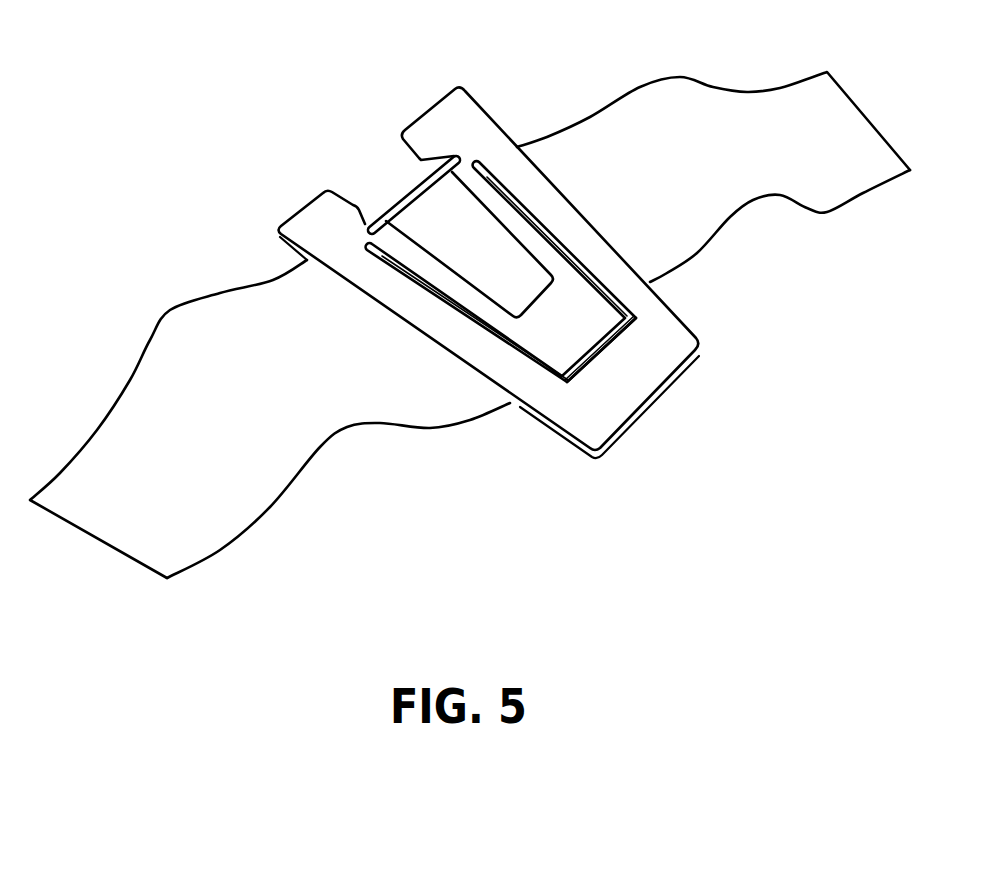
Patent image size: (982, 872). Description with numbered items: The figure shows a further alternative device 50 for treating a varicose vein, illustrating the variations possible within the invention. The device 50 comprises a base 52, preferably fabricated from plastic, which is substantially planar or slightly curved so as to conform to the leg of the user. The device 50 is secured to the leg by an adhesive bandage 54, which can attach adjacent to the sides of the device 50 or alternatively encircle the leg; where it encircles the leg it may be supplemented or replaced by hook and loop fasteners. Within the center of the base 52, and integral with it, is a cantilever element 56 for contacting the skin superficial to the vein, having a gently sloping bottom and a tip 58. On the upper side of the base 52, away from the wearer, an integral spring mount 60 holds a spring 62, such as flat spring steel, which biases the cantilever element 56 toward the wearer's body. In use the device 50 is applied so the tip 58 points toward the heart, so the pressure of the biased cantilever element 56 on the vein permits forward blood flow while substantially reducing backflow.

The alternative device 50 is at (277, 240).
The base 52 is at (672, 345).
The adhesive bandage 54 is at (587, 158).
The cantilever element 56 is at (560, 343).
The tip 58 is at (580, 375).
The spring mount 60 is at (445, 162).
The spring 62 is at (435, 222).